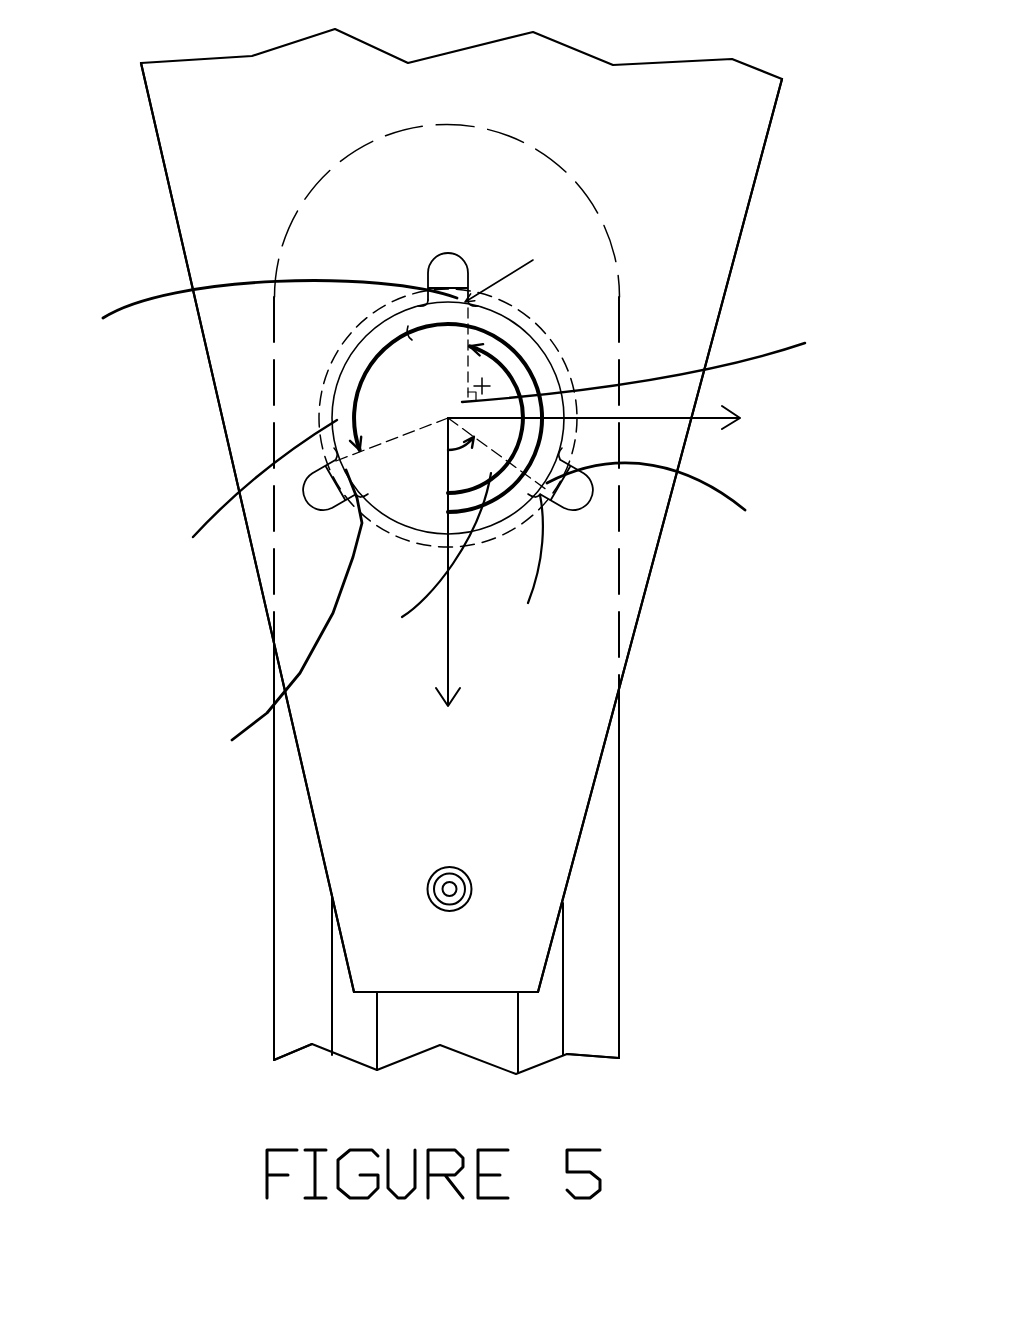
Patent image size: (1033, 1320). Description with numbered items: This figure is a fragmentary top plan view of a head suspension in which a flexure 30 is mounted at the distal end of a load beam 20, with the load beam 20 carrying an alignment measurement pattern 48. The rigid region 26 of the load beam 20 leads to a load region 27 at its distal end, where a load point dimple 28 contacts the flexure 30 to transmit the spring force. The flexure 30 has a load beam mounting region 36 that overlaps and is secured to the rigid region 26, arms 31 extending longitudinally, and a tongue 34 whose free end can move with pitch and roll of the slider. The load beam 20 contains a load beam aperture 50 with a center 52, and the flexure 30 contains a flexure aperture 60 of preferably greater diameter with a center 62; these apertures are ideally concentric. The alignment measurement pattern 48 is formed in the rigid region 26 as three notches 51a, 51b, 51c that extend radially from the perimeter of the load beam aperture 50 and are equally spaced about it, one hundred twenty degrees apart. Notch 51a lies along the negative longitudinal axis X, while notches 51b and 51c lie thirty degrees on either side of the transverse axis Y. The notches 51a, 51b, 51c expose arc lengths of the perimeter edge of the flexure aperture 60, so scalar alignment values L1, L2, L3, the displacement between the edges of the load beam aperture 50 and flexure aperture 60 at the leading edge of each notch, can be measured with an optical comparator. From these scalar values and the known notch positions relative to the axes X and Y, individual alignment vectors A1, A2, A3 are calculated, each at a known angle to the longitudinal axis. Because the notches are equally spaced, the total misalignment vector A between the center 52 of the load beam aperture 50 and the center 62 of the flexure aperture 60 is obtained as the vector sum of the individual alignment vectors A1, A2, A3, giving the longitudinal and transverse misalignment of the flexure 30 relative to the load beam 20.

The load beam 20 is at (794, 55).
The rigid region 26 is at (360, 762).
The load region 27 is at (545, 900).
The load point dimple 28 is at (458, 886).
The flexure 30 is at (228, 1047).
The arms 31 is at (288, 958).
The tongue 34 is at (480, 1037).
The load beam mounting region 36 is at (298, 252).
The alignment measurement pattern 48 is at (600, 284).
The load beam aperture 50 is at (333, 463).
The notch 51a is at (447, 278).
The notch 51b is at (573, 502).
The notch 51c is at (328, 502).
The center of load beam aperture 52 is at (448, 418).
The flexure aperture 60 is at (353, 347).
The center of flexure aperture 62 is at (482, 386).
The longitudinal axis X is at (448, 583).
The transverse axis Y is at (607, 418).
The total misalignment vector A is at (830, 336).
The individual alignment vector A1 is at (548, 259).
The individual alignment vector A2 is at (521, 608).
The individual alignment vector A3 is at (161, 533).
The scalar alignment value L1 is at (271, 310).
The scalar alignment value L2 is at (664, 502).
The scalar alignment value L3 is at (281, 619).